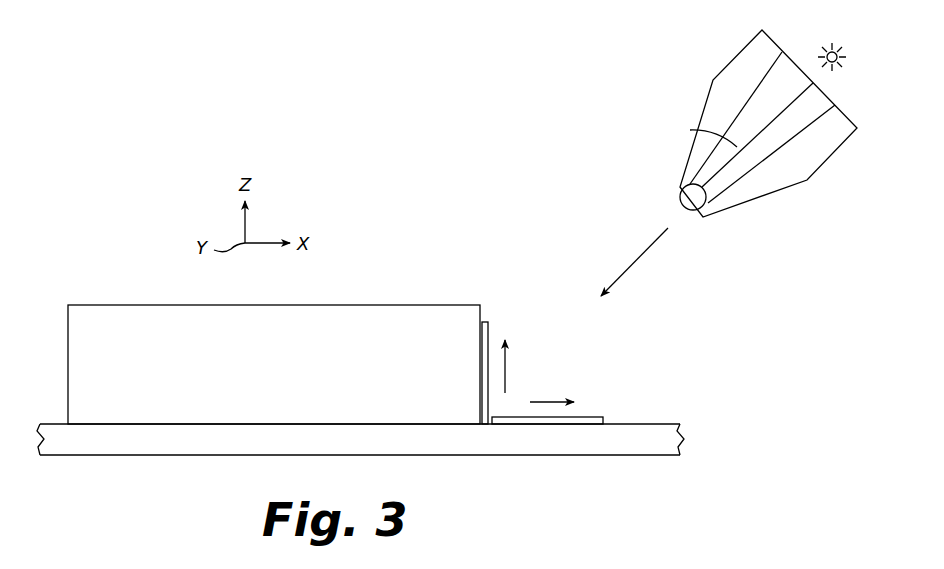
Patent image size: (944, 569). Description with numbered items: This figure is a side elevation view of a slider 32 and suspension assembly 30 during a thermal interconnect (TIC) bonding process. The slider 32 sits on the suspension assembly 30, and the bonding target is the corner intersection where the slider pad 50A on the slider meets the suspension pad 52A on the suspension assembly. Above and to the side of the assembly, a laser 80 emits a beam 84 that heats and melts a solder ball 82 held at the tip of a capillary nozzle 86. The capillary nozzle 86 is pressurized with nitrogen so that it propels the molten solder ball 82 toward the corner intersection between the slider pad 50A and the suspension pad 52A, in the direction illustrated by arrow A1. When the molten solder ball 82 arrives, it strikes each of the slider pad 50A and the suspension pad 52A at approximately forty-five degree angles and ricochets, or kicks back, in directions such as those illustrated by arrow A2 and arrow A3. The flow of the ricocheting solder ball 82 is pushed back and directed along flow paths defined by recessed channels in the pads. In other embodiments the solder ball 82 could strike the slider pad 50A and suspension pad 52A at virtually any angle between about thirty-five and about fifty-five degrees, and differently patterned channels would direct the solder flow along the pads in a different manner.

The suspension assembly 30 is at (53, 420).
The slider 32 is at (64, 308).
The slider pad 50A is at (487, 321).
The suspension pad 52A is at (606, 416).
The laser 80 is at (838, 66).
The solder ball 82 is at (680, 202).
The beam 84 is at (690, 130).
The capillary nozzle 86 is at (722, 67).
The arrow A1 is at (642, 260).
The arrow A2 is at (531, 402).
The arrow A3 is at (512, 363).